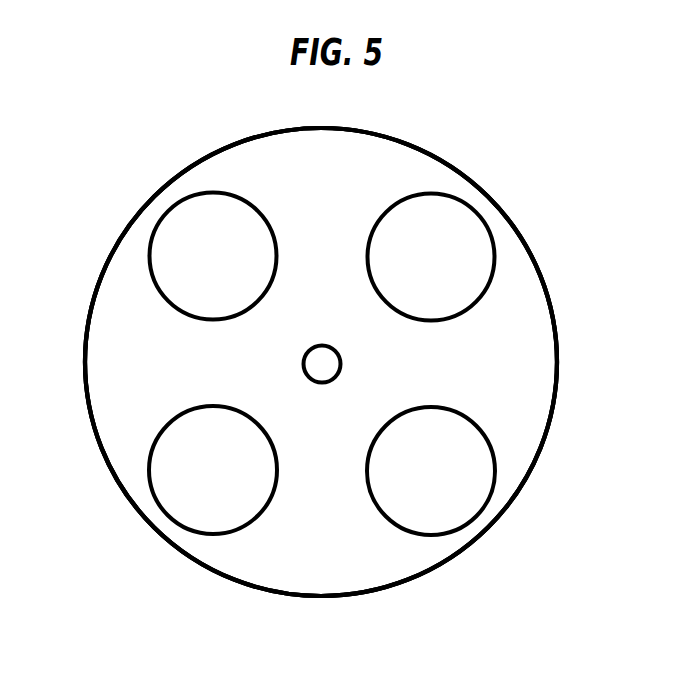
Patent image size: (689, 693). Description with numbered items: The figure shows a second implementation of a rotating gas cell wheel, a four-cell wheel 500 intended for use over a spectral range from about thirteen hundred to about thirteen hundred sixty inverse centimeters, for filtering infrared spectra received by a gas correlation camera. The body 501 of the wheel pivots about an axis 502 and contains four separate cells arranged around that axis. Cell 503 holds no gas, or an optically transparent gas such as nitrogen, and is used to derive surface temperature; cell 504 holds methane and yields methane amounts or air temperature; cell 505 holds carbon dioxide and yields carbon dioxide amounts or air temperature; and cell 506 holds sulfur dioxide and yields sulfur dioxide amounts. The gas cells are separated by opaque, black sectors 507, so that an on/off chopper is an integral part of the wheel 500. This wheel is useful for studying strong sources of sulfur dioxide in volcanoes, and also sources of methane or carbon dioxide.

The 4-cell wheel 500 is at (494, 141).
The body 501 is at (111, 313).
The axis 502 is at (303, 352).
The cell 503 is at (234, 212).
The cell 504 is at (480, 264).
The cell 505 is at (468, 490).
The cell 506 is at (175, 503).
The opaque, black sectors 507 is at (337, 563).